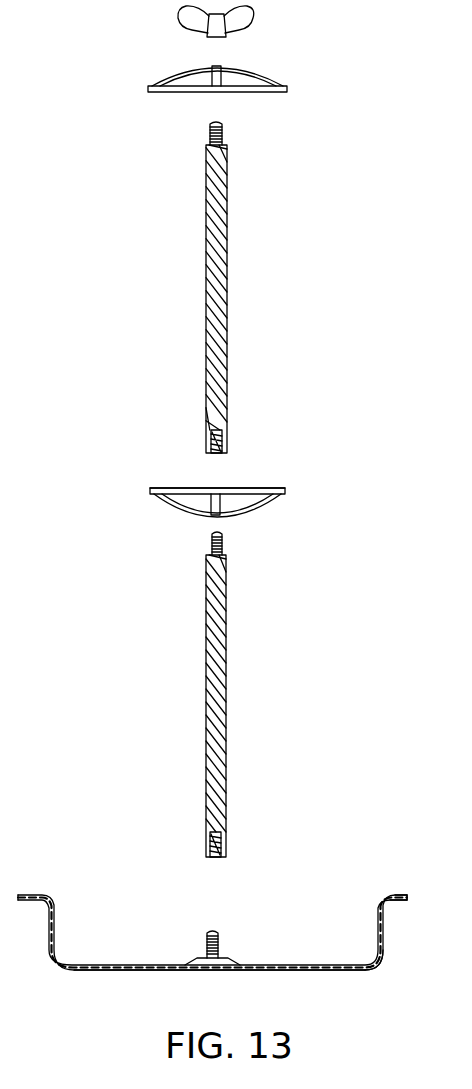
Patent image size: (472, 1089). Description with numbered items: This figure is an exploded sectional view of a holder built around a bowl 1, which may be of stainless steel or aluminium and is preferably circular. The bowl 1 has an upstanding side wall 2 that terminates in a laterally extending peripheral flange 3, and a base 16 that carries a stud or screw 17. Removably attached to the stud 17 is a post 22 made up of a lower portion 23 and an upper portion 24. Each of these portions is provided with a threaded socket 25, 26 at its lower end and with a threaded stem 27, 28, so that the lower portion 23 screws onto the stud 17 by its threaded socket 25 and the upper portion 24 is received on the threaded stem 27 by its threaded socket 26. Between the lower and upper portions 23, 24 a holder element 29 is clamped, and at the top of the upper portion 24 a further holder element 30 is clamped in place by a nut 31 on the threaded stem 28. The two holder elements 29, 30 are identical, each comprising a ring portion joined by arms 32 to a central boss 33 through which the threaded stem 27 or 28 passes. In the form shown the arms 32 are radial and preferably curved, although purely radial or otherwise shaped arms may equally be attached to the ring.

The bowl 1 is at (384, 932).
The side wall 2 is at (383, 962).
The peripheral flange 3 is at (402, 893).
The base 16 is at (296, 965).
The stud 17 is at (219, 934).
The post 22 is at (234, 365).
The lower portion 23 is at (227, 662).
The upper portion 24 is at (229, 285).
The threaded socket 25 is at (216, 858).
The threaded socket 26 is at (216, 455).
The threaded stem 27 is at (206, 538).
The threaded stem 28 is at (223, 131).
The holder element 29 is at (286, 491).
The further holder element 30 is at (288, 89).
The nut 31 is at (236, 31).
The arms 32 is at (255, 508).
The central boss 33 is at (210, 502).